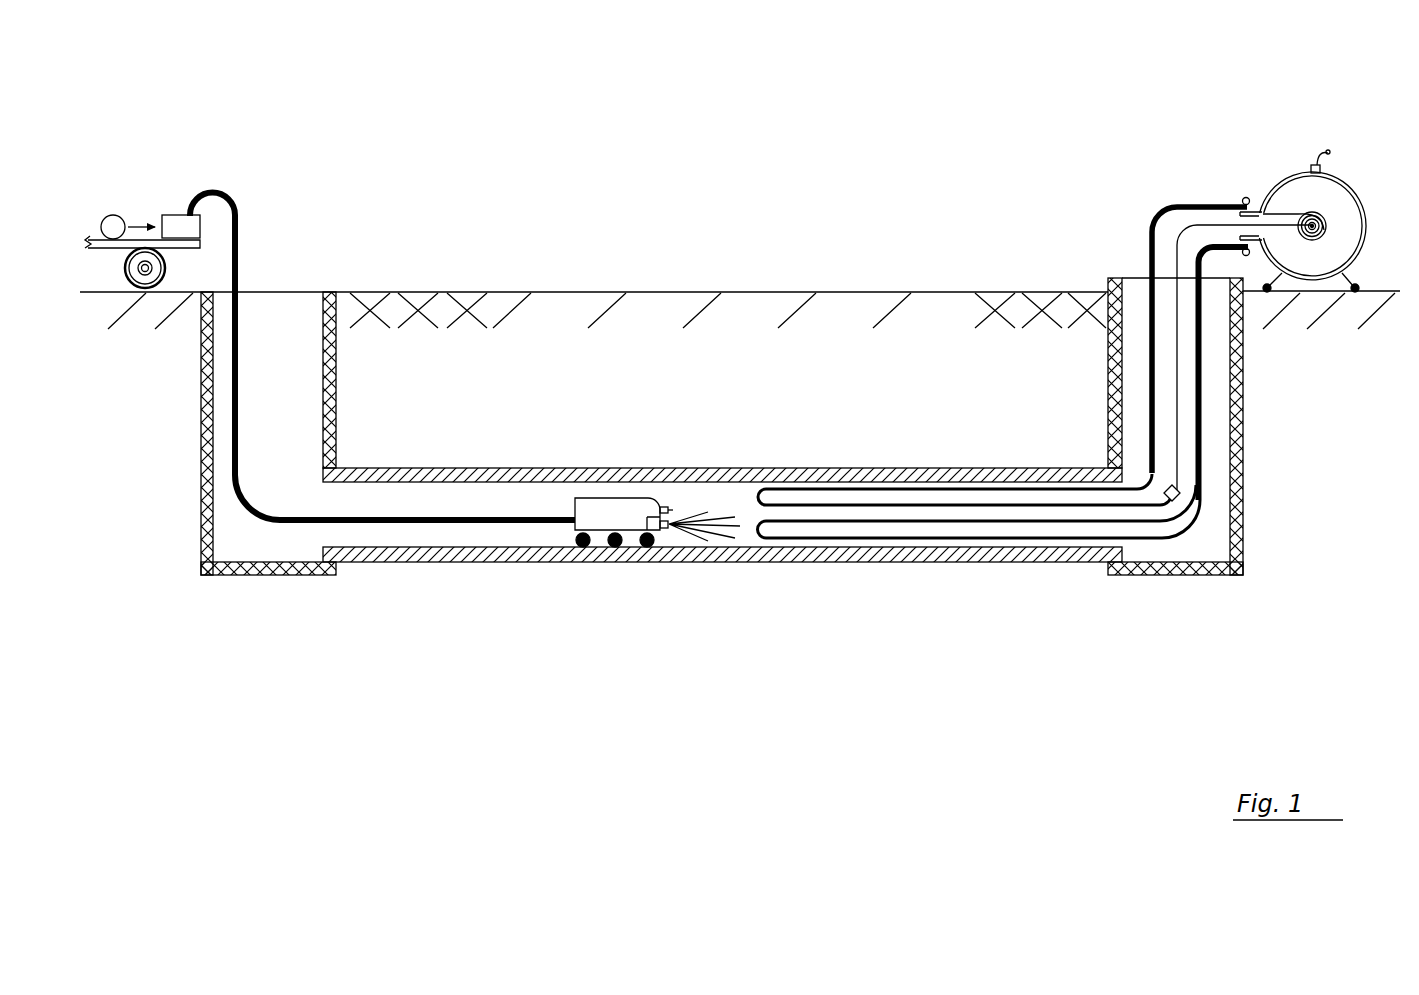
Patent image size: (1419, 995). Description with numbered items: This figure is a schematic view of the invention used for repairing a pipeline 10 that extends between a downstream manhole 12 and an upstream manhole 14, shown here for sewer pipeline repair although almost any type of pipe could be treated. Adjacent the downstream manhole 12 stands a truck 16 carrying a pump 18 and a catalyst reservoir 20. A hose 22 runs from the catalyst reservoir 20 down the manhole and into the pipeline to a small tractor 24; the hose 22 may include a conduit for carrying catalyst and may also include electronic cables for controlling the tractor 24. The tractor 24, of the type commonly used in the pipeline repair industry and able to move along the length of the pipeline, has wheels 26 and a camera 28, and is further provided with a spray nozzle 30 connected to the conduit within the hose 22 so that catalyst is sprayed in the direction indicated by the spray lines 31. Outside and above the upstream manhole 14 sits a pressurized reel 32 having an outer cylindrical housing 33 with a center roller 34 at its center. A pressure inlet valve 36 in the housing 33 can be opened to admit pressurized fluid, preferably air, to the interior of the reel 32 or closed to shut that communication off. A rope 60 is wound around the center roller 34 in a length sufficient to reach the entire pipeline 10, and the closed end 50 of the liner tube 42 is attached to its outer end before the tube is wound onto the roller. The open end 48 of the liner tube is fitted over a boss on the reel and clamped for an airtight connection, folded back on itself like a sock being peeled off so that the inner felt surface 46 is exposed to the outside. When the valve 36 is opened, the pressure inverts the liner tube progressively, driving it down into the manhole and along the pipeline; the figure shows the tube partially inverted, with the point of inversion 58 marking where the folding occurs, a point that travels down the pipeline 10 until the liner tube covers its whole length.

The pipeline 10 is at (455, 466).
The downstream manhole 12 is at (318, 370).
The upstream manhole 14 is at (1125, 368).
The truck 16 is at (174, 276).
The pump 18 is at (122, 216).
The catalyst reservoir 20 is at (170, 213).
The hose 22 is at (238, 222).
The tractor 24 is at (608, 498).
The wheels 26 is at (583, 548).
The camera 28 is at (660, 508).
The spray nozzle 30 is at (658, 535).
The spray lines 31 is at (698, 538).
The pressurized reel 32 is at (1296, 233).
The outer cylindrical housing 33 is at (1348, 183).
The center roller 34 is at (1321, 228).
The pressure inlet valve 36 is at (1309, 167).
The liner tube 42 is at (1177, 336).
The inner felt surface 46 is at (1164, 206).
The open end 48 is at (1246, 256).
The closed end 50 is at (1197, 490).
The point of inversion 58 is at (749, 523).
The rope 60 is at (1178, 398).